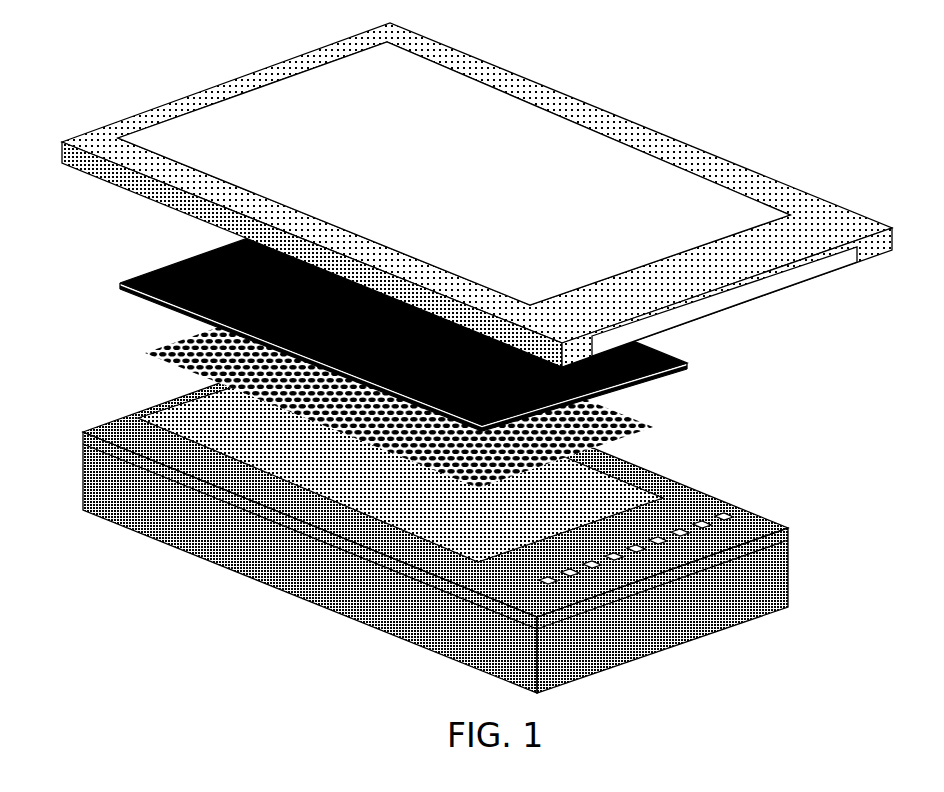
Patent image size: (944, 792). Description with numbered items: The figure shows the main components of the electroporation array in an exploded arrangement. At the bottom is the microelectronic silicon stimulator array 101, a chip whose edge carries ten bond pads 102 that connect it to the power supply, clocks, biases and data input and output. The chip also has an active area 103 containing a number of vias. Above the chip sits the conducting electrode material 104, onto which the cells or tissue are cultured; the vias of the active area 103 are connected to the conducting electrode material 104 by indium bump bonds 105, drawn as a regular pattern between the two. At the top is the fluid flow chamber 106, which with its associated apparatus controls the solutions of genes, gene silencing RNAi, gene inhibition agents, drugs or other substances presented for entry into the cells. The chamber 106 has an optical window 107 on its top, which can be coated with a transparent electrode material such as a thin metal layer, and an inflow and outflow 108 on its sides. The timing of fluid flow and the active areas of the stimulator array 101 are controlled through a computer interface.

The microelectronic stimulator array 101 is at (225, 568).
The bond pads 102 is at (683, 540).
The active area 103 is at (137, 416).
The conducting electrode material 104 is at (118, 283).
The indium bump bonds 105 is at (652, 426).
The fluid flow chamber 106 is at (160, 100).
The optical window 107 is at (600, 128).
The inflow and outflow 108 is at (745, 301).